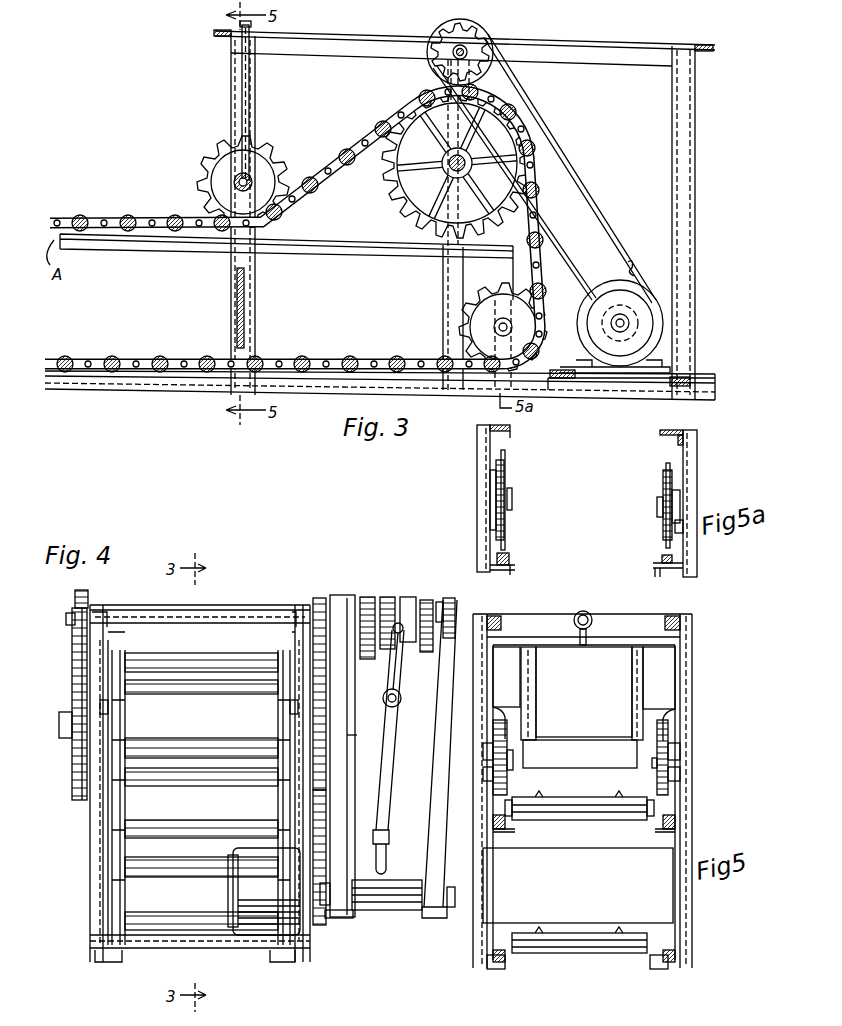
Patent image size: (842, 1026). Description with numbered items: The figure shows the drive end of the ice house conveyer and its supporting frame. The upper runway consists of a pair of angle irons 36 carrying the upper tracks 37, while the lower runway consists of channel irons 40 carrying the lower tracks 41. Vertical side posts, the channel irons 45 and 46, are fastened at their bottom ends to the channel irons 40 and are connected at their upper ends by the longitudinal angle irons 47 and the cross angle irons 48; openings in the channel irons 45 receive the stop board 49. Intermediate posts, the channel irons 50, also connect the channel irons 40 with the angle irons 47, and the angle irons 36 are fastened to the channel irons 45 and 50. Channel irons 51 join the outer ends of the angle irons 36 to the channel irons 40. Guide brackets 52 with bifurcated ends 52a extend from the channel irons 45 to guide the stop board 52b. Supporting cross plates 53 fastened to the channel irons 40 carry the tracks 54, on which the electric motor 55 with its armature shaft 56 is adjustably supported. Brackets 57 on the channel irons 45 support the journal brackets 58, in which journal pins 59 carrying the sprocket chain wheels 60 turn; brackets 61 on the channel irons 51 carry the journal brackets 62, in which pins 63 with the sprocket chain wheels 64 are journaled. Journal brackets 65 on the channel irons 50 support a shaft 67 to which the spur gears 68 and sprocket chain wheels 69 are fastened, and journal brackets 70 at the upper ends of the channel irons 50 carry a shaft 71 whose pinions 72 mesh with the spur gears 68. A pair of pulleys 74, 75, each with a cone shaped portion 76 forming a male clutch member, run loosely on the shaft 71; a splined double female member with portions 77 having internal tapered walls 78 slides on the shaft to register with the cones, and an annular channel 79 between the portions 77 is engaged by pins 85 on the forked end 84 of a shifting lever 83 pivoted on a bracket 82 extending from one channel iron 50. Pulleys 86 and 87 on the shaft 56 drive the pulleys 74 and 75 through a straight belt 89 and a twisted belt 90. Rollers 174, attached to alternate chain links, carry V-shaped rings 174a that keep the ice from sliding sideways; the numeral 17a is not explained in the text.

In FIG. 3, the angle irons 36 is at (356, 258).
In FIG. 5, the angle irons 36 is at (584, 832).
In FIG. 5A, the angle irons 36 is at (664, 434).
In FIG. 3, the upper tracks 37 is at (330, 212).
In FIG. 5, the upper tracks 37 is at (584, 839).
In FIG. 3, the channel irons 40 is at (152, 391).
In FIG. 4, the channel irons 40 is at (275, 963).
In FIG. 5, the channel irons 40 is at (650, 969).
In FIG. 5A, the channel irons 40 is at (653, 566).
In FIG. 5, the lower tracks 41 is at (692, 958).
In FIG. 3, the channel irons 45 is at (231, 298).
In FIG. 5, the channel irons 45 is at (692, 672).
In FIG. 3, the channel irons 46 is at (697, 186).
In FIG. 4, the channel irons 46 is at (318, 960).
In FIG. 3, the angle irons 47 is at (600, 68).
In FIG. 5, the angle irons 47 is at (665, 630).
In FIG. 3, the angle irons 48 is at (700, 59).
In FIG. 4, the angle irons 48 is at (250, 612).
In FIG. 5, the angle irons 48 is at (620, 608).
In FIG. 3, the stop board 49 is at (246, 320).
In FIG. 5, the stop board 49 is at (578, 885).
In FIG. 3, the channel irons 50 is at (443, 285).
In FIG. 3, the channel irons 51 is at (498, 266).
In FIG. 5A, the channel irons 51 is at (697, 460).
In FIG. 5, the guide brackets 52 is at (584, 694).
In FIG. 3, the bifurcated ends 52a is at (251, 120).
In FIG. 5, the bifurcated ends 52a is at (600, 688).
In FIG. 3, the stop board 52b is at (242, 100).
In FIG. 5, the stop board 52b is at (580, 754).
In FIG. 3, the supporting cross plates 53 is at (698, 384).
In FIG. 4, the supporting cross plates 53 is at (222, 948).
In FIG. 3, the tracks 54 is at (697, 376).
In FIG. 3, the electric motor 55 is at (622, 282).
In FIG. 4, the electric motor 55 is at (264, 891).
In FIG. 3, the armature shaft 56 is at (622, 323).
In FIG. 4, the armature shaft 56 is at (394, 911).
In FIG. 5, the brackets 57 is at (680, 776).
In FIG. 5, the journal brackets 58 is at (680, 753).
In FIG. 3, the journal pins 59 is at (237, 183).
In FIG. 5, the journal pins 59 is at (582, 763).
In FIG. 3, the sprocket chain wheels 60 is at (216, 158).
In FIG. 5, the sprocket chain wheels 60 is at (657, 727).
In FIG. 5A, the brackets 61 is at (680, 534).
In FIG. 5A, the journal brackets 62 is at (680, 480).
In FIG. 5A, the pins 63 is at (657, 506).
In FIG. 5A, the sprocket chain wheels 64 is at (666, 470).
In FIG. 3, the journal brackets 65 is at (446, 170).
In FIG. 4, the journal brackets 65 is at (193, 707).
In FIG. 3, the shaft 67 is at (445, 155).
In FIG. 4, the shaft 67 is at (57, 722).
In FIG. 3, the spur gears 68 is at (396, 205).
In FIG. 4, the spur gears 68 is at (326, 805).
In FIG. 3, the sprocket chain wheels 69 is at (380, 184).
In FIG. 3, the journal brackets 70 is at (440, 60).
In FIG. 4, the journal brackets 70 is at (201, 638).
In FIG. 3, the shaft 71 is at (470, 50).
In FIG. 4, the shaft 71 is at (66, 620).
In FIG. 3, the pinions 72 is at (472, 33).
In FIG. 4, the pinions 72 is at (322, 598).
In FIG. 4, the pulley 74 is at (346, 597).
In FIG. 4, the pulley 75 is at (448, 598).
In FIG. 4, the cone shaped portions 76 is at (371, 637).
In FIG. 4, the portions 77 is at (425, 600).
In FIG. 4, the internal tapered walls 78 is at (407, 610).
In FIG. 4, the annular channel 79 is at (452, 602).
In FIG. 4, the bracket 82 is at (361, 745).
In FIG. 4, the shifting lever 83 is at (386, 772).
In FIG. 4, the forked end 84 is at (400, 705).
In FIG. 4, the pins 85 is at (404, 675).
In FIG. 4, the pulley 86 is at (356, 880).
In FIG. 4, the pulley 87 is at (440, 880).
In FIG. 4, the straight belt 89 is at (340, 928).
In FIG. 4, the twisted belt 90 is at (440, 822).
In FIG. 4, the rollers 174 is at (201, 789).
In FIG. 5, the rollers 174 is at (579, 884).
In FIG. 5, the V-shaped rings 174a is at (615, 837).
In FIG. 5, the guide 17a is at (579, 793).